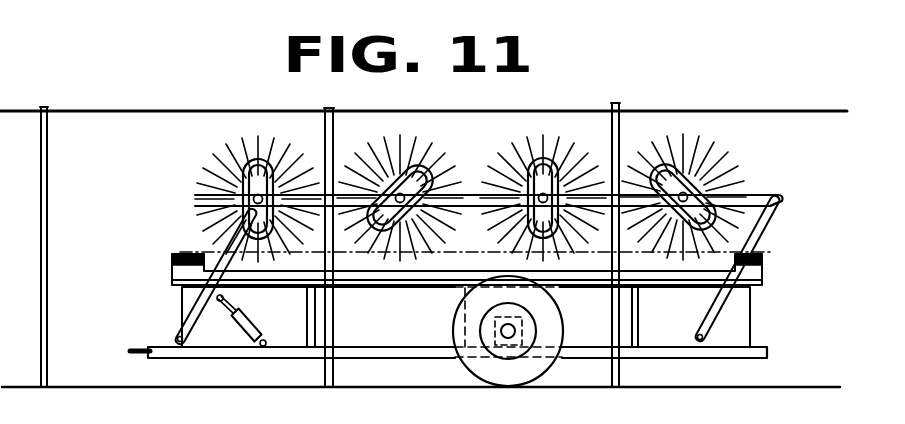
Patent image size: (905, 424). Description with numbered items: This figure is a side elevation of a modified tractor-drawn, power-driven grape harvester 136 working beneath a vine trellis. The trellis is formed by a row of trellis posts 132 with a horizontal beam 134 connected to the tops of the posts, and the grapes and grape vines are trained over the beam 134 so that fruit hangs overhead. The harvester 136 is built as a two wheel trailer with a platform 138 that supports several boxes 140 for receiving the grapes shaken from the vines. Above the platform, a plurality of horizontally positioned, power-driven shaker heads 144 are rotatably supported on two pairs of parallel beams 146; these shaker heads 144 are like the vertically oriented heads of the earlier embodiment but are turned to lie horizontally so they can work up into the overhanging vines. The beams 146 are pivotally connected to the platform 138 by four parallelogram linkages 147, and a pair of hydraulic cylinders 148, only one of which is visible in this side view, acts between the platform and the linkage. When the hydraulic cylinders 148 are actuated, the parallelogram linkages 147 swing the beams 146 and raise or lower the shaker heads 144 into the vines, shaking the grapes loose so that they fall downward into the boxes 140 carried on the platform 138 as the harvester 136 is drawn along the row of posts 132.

The trellis posts 132 is at (48, 232).
The horizontal beam 134 is at (48, 107).
The harvester 136 is at (182, 216).
The platform 138 is at (150, 348).
The boxes 140 is at (412, 321).
The shaker heads 144 is at (216, 142).
The parallel beams 146 is at (756, 190).
The parallelogram linkages 147 is at (192, 312).
The hydraulic cylinders 148 is at (248, 312).